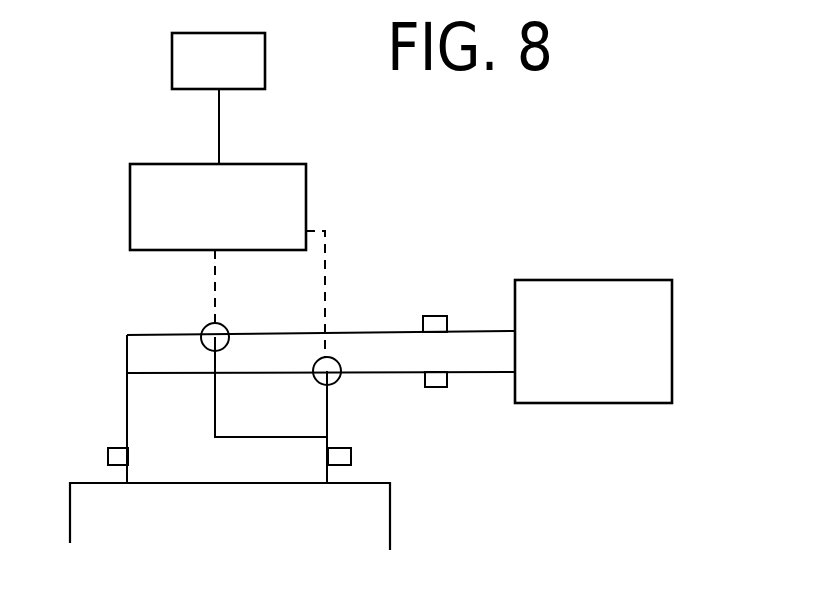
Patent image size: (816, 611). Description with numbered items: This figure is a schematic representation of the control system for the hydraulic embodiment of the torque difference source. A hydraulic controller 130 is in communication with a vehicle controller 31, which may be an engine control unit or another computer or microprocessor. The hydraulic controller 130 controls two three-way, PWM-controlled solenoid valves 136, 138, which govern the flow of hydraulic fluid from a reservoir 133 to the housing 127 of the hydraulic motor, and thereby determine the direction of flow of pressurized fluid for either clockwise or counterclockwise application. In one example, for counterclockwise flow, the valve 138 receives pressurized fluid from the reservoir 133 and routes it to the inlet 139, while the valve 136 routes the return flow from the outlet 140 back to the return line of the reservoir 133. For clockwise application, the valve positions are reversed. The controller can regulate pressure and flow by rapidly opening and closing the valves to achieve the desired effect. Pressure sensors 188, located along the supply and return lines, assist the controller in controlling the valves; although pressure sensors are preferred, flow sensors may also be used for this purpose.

The vehicle controller 31 is at (265, 68).
The hydraulic controller 130 is at (306, 197).
The reservoir 133 is at (672, 310).
The solenoid valve 136 is at (336, 382).
The solenoid valve 138 is at (202, 327).
The pressure sensors 188 is at (118, 447).
The housing 127 is at (390, 518).
The inlet 139 is at (123, 520).
The outlet 140 is at (338, 521).